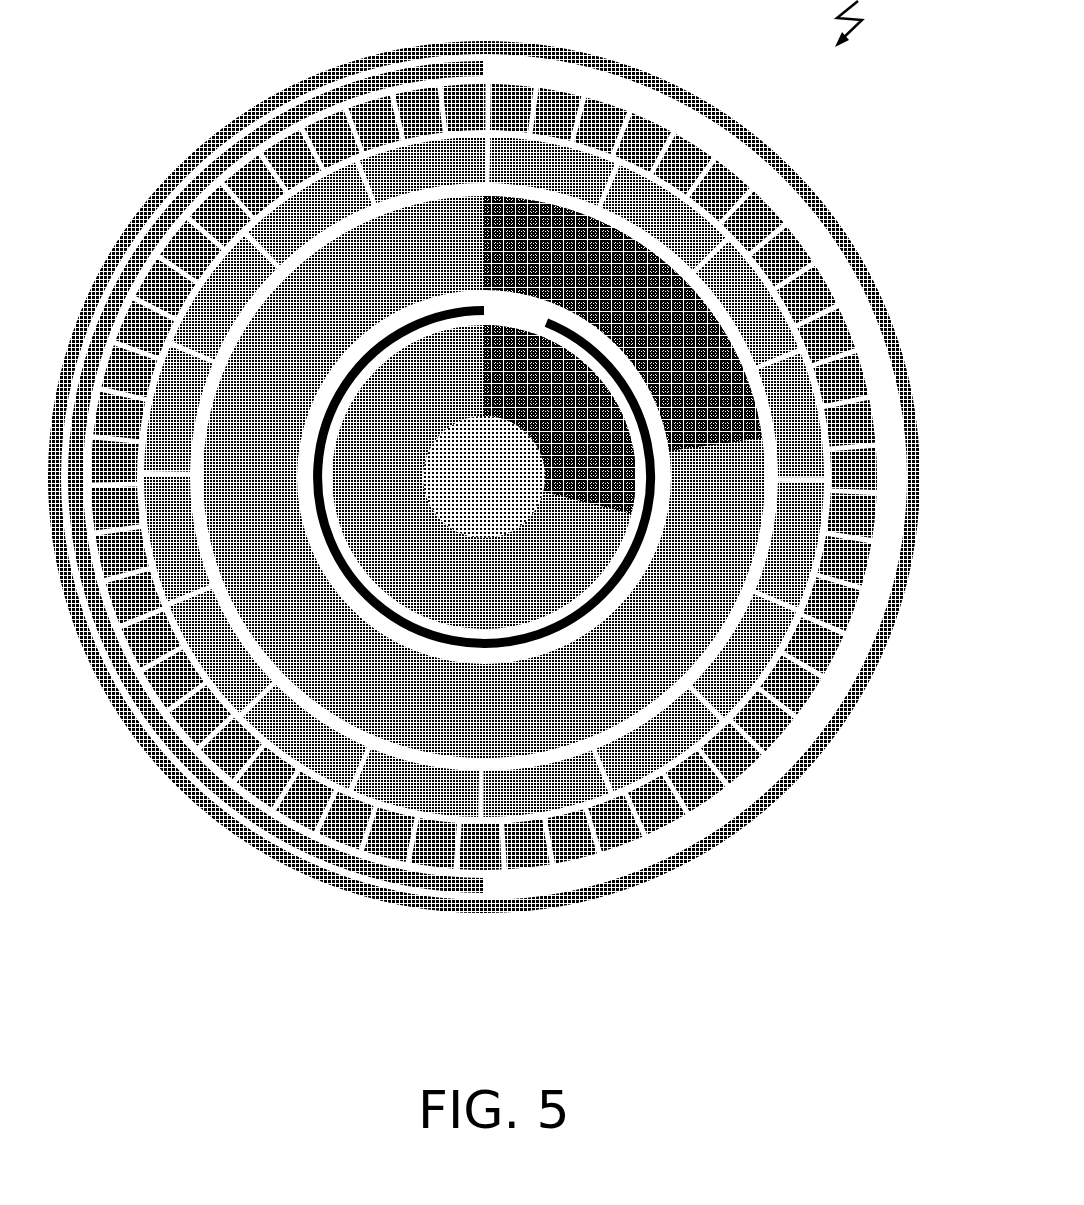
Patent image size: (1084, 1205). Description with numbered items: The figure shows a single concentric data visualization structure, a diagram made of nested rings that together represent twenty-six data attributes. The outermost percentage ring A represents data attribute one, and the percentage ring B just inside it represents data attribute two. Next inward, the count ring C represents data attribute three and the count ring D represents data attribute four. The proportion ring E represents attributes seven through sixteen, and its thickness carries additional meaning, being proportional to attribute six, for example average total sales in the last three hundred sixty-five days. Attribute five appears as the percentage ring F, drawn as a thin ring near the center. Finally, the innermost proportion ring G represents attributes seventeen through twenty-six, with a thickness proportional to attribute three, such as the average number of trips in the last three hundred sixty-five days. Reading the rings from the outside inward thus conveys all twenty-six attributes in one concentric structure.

The percentage ring A is at (668, 80).
The percentage ring B is at (277, 118).
The count ring C is at (725, 195).
The count ring D is at (290, 212).
The proportion ring E is at (707, 400).
The percentage ring F is at (327, 423).
The proportion ring G is at (610, 532).